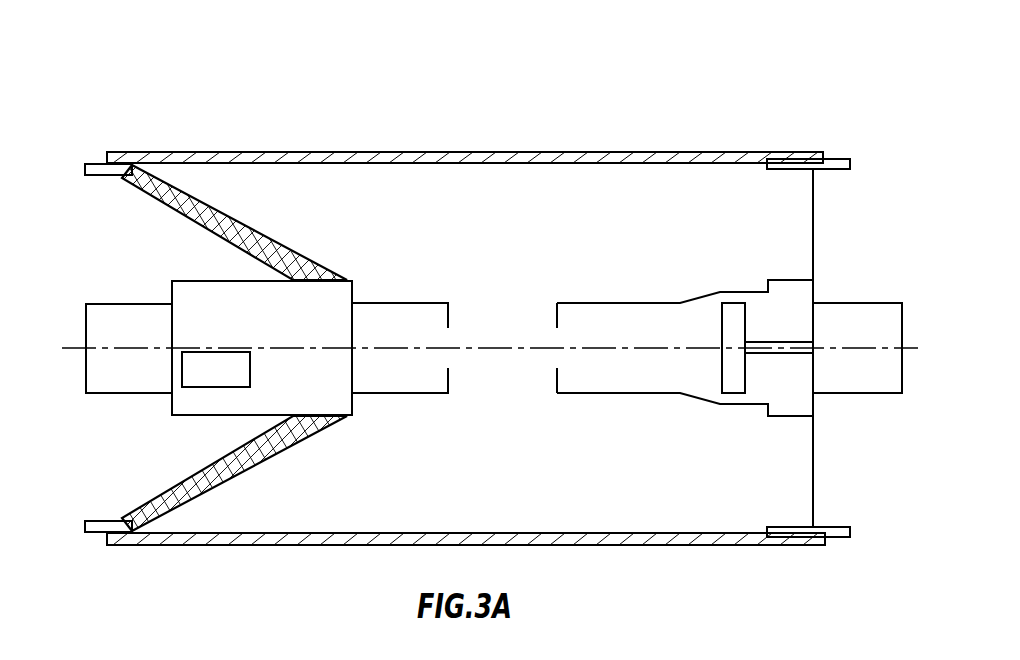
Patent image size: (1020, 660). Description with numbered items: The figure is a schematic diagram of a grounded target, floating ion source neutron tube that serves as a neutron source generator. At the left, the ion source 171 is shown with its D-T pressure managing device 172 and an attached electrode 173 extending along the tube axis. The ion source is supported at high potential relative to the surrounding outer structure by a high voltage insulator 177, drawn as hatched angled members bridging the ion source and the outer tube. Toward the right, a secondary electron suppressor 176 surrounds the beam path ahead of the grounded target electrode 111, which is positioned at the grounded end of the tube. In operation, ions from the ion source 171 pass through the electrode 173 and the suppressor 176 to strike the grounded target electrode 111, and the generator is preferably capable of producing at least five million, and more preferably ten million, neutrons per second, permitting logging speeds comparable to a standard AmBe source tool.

The high voltage insulator 177 is at (250, 220).
The ion source 171 is at (292, 314).
The D-T pressure managing device 172 is at (210, 370).
The electrode 173 is at (429, 294).
The secondary electron suppressor 176 is at (613, 294).
The grounded target electrode 111 is at (737, 368).